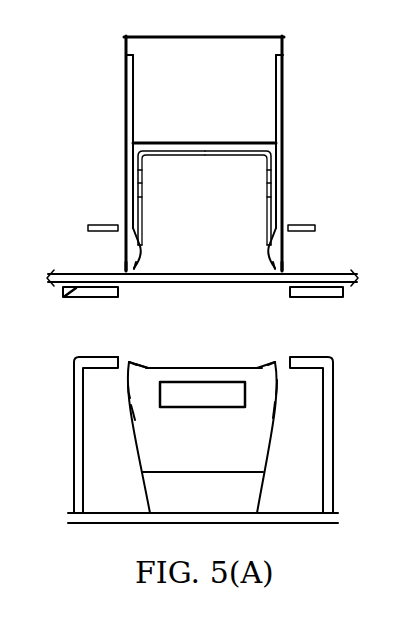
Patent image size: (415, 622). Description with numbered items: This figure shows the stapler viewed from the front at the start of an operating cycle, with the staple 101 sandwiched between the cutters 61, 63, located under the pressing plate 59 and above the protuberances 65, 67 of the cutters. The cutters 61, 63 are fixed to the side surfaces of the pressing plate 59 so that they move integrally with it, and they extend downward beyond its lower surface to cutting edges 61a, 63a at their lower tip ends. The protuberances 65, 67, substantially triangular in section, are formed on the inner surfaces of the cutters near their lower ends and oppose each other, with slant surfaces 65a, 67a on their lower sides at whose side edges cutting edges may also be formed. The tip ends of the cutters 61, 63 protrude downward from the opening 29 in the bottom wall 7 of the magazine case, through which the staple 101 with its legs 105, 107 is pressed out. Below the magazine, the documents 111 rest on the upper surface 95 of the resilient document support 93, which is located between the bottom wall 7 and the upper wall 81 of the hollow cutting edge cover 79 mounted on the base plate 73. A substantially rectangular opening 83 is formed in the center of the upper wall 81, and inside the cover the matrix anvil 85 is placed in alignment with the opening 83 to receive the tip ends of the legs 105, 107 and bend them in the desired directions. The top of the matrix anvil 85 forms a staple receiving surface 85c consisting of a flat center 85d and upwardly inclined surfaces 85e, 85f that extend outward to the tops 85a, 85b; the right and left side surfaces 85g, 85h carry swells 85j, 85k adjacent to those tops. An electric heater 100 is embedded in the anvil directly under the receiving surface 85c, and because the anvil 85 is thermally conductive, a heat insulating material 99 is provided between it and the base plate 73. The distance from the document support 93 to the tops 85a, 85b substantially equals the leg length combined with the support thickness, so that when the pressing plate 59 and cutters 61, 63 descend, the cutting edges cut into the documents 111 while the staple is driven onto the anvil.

The pressing plate 59 is at (262, 47).
The cutter 63 is at (125, 103).
The cutter 61 is at (283, 103).
The staple 101 is at (283, 167).
The leg 107 is at (127, 193).
The leg 105 is at (282, 193).
The protuberance 67 is at (140, 244).
The slant surface 67a is at (142, 252).
The protuberance 65 is at (268, 242).
The slant surface 65a is at (266, 254).
The cutting edge 63a is at (122, 268).
The cutting edge 61a is at (284, 268).
The bottom wall 7 is at (90, 226).
The opening 29 is at (292, 227).
The documents 111 is at (350, 276).
The document support 93 is at (68, 297).
The upper surface 95 is at (65, 289).
The base plate 73 is at (300, 520).
The cutting edge cover 79 is at (74, 448).
The upper wall 81 is at (100, 357).
The matrix anvil 85 is at (255, 456).
The opening 83 is at (130, 363).
The top 85b is at (140, 368).
The upwardly inclined surface 85f is at (150, 368).
The flat center 85d is at (190, 368).
The staple receiving surface 85c is at (225, 368).
The upwardly inclined surface 85e is at (262, 368).
The top 85a is at (277, 370).
The electric heater 100 is at (160, 388).
The swell 85k is at (134, 393).
The side surface 85h is at (136, 412).
The heat insulating material 99 is at (155, 483).
The swell 85j is at (273, 387).
The side surface 85g is at (275, 408).